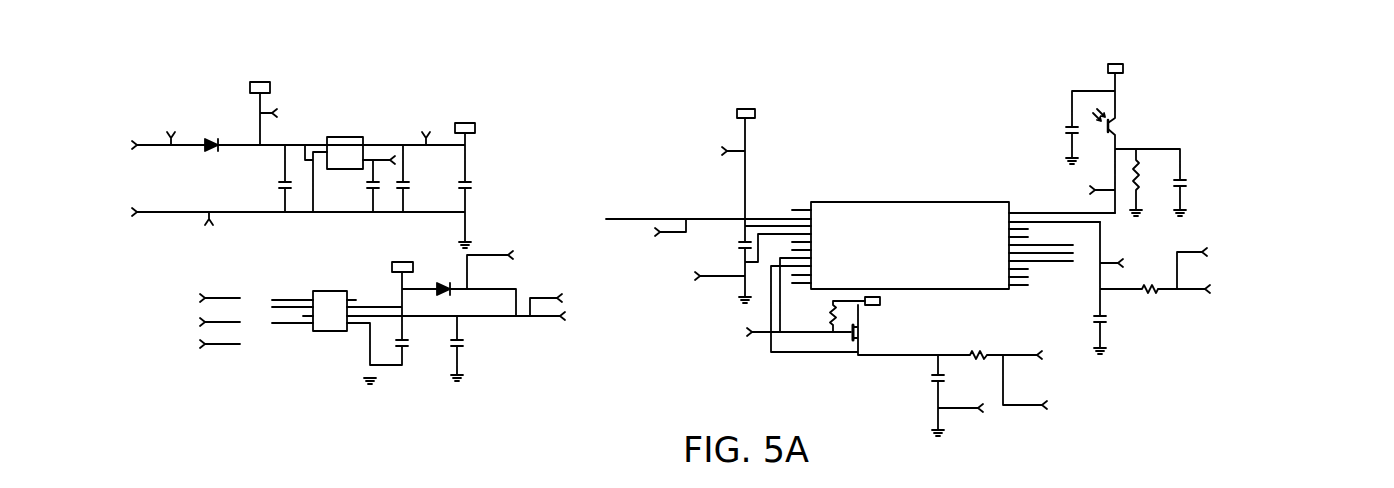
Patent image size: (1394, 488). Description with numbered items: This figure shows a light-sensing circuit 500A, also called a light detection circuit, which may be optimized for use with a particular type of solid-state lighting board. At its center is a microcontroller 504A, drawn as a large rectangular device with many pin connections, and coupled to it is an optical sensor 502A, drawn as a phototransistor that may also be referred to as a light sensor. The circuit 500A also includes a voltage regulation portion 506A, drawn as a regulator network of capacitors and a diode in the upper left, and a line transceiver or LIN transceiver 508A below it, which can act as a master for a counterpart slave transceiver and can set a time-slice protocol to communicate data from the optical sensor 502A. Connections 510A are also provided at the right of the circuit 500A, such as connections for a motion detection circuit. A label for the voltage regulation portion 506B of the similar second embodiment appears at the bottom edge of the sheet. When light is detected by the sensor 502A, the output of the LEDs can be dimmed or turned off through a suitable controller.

The light-sensing circuit 500A is at (898, 64).
The optical sensor 502A is at (1132, 102).
The microcontroller 504A is at (847, 202).
The voltage regulation portion 506A is at (197, 105).
The line transceiver 508A is at (315, 359).
The output connector circuit 510A is at (1207, 292).
The voltage regulation portion 506B is at (176, 487).